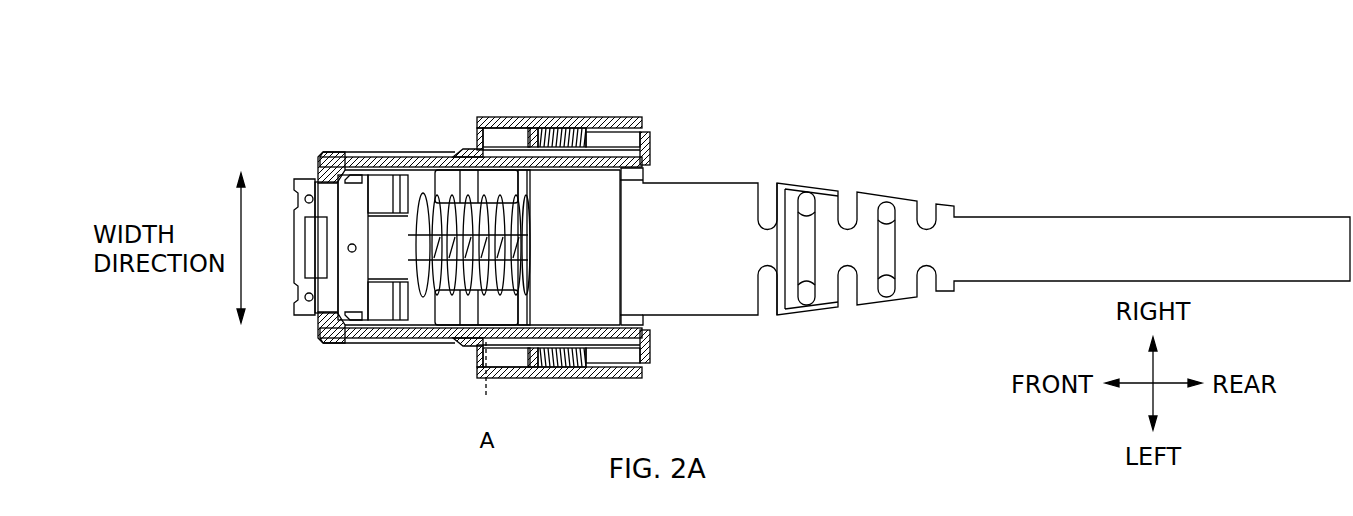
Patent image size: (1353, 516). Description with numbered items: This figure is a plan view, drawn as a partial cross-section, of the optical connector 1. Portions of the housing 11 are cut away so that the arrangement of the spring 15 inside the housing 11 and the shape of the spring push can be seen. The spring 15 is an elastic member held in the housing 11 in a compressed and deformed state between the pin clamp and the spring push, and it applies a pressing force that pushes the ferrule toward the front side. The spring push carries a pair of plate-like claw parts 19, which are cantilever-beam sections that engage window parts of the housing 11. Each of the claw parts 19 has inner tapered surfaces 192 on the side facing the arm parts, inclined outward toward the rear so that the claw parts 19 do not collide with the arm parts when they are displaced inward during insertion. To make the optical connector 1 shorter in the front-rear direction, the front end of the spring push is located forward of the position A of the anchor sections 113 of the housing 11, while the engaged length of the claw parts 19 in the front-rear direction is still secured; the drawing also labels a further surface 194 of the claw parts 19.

The optical connector 1 is at (735, 98).
The housing 11 is at (355, 156).
The anchor sections 113 is at (468, 347).
The spring 15 is at (427, 292).
The claw parts 19 is at (415, 67).
The inner tapered surfaces 192 is at (463, 187).
The second stopper member 194 is at (517, 187).